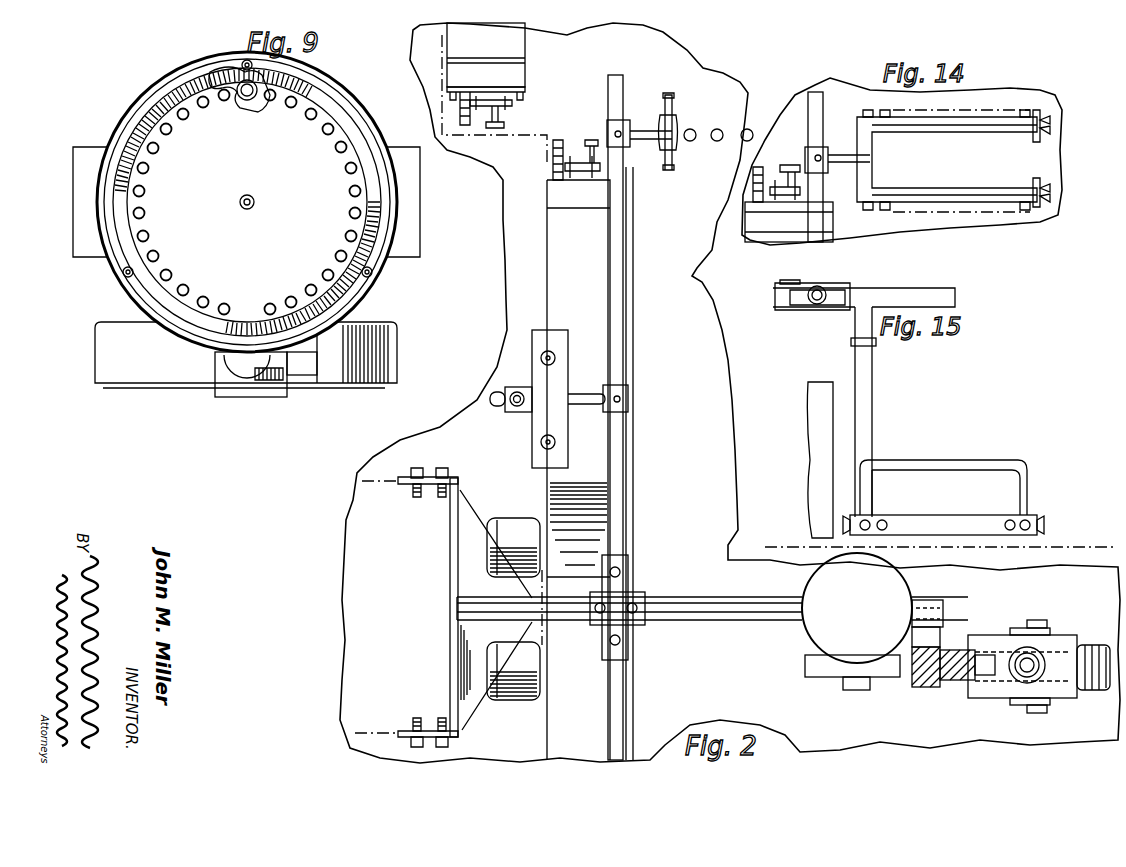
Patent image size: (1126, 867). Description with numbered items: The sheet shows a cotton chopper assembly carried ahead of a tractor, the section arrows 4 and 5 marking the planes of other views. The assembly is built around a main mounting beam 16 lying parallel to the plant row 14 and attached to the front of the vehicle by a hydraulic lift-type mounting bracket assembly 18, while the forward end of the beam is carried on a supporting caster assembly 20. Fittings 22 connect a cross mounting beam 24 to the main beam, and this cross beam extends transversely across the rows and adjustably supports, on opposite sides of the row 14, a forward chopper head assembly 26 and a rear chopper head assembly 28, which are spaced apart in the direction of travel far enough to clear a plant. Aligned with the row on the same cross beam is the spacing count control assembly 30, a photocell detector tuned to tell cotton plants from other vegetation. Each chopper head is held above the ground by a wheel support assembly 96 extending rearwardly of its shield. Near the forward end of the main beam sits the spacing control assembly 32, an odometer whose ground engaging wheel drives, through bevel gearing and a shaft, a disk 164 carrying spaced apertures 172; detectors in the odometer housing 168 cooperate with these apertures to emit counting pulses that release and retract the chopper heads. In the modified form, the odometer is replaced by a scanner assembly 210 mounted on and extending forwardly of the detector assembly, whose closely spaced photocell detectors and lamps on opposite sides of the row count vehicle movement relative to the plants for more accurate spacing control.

In FIG. 2, the section line 4- 4 is at (440, 38).
In FIG. 2, the section line 5- 5 is at (477, 580).
In FIG. 2, the plant row 14 is at (720, 125).
In FIG. 2, the main mounting beam 16 is at (690, 606).
In FIG. 2, the hydraulic lift-type mounting bracket assembly 18 is at (446, 680).
In FIG. 2, the supporting caster assembly 20 is at (1083, 632).
In FIG. 2, the fittings 22 is at (633, 566).
In FIG. 2, the cross mounting beam 24 is at (618, 322).
In FIG. 2, the chopper head assembly 26 is at (545, 268).
In FIG. 2, the chopper head assembly 28 is at (531, 56).
In FIG. 2, the spacing count control assembly 30 is at (672, 95).
In FIG. 14, the spacing count control assembly 30 is at (858, 131).
In FIG. 9, the spacing control assembly 32 is at (101, 120).
In FIG. 2, the spacing control assembly 32 is at (830, 583).
In FIG. 2, the wheel support assembly 96 is at (512, 382).
In FIG. 9, the disk 164 is at (217, 127).
In FIG. 9, the odometer housing 168 is at (150, 87).
In FIG. 9, the spaced apertures 172 is at (317, 118).
In FIG. 14, the scanner assembly 210 is at (1027, 106).
In FIG. 15, the scanner assembly 210 is at (978, 455).